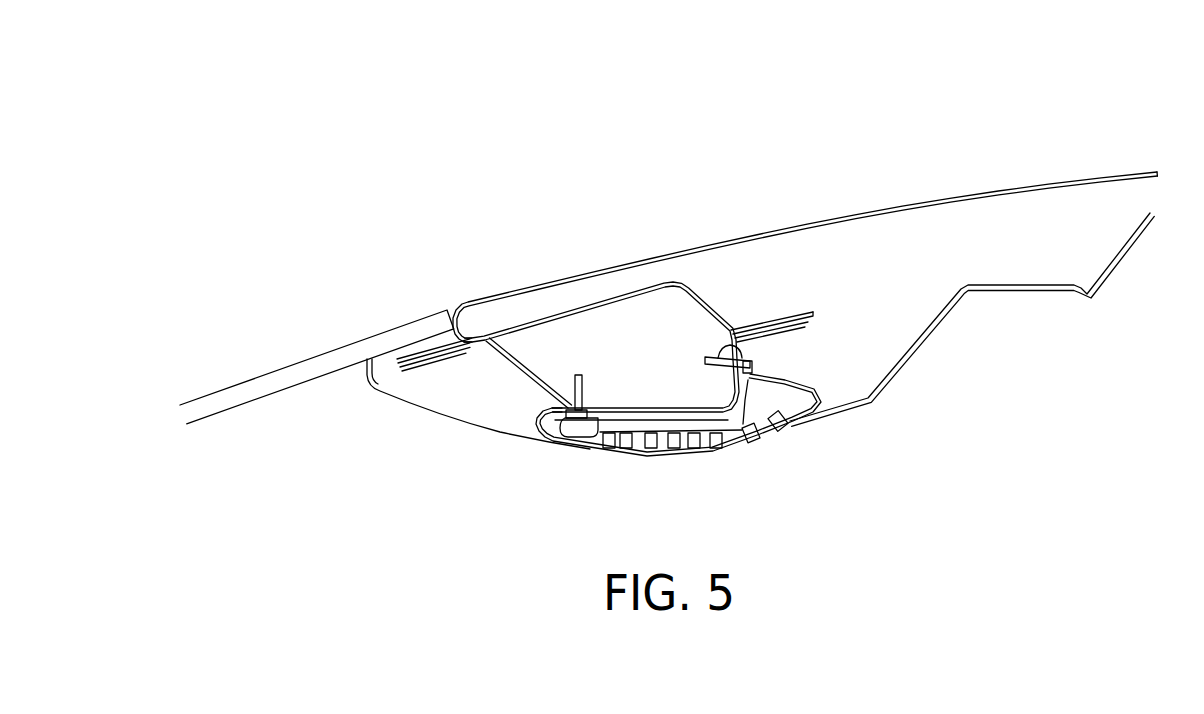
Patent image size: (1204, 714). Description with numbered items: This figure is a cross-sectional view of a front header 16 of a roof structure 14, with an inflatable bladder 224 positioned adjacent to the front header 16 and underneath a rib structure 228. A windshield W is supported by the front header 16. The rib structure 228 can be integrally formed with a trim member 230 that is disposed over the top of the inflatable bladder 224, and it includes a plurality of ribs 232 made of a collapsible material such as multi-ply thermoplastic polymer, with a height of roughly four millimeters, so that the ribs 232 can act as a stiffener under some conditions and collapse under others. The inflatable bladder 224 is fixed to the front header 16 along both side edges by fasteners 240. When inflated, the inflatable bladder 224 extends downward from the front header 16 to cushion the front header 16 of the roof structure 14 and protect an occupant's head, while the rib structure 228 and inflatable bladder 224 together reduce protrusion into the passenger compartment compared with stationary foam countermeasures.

The roof structure 14 is at (996, 162).
The windshield W is at (327, 363).
The front header 16 is at (648, 410).
The rib structure 228 is at (619, 470).
The inflatable bladder 224 is at (650, 440).
The ribs 232 is at (653, 438).
The fasteners 240 is at (749, 346).
The trim member 230 is at (862, 418).